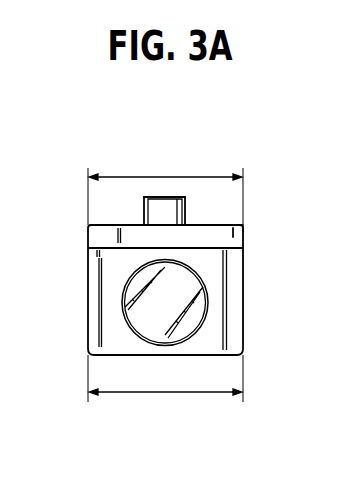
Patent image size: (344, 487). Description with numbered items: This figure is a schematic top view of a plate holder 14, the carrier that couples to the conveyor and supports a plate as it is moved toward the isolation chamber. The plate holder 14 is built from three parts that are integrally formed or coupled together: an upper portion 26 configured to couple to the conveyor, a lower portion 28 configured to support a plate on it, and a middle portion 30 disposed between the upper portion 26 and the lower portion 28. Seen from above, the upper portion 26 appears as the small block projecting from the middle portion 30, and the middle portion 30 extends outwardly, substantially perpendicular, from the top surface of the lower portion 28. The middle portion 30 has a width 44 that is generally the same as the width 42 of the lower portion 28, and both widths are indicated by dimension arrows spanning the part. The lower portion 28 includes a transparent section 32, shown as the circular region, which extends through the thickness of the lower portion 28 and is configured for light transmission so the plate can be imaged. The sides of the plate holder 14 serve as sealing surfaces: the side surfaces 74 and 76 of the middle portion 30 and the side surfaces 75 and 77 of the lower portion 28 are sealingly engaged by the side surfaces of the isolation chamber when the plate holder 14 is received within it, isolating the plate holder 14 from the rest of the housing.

The plate holder 14 is at (230, 147).
The upper portion 26 is at (161, 197).
The lower portion 28 is at (115, 335).
The middle portion 30 is at (243, 214).
The transparent section 32 is at (183, 293).
The width of the lower portion 42 is at (170, 394).
The width of the middle portion 44 is at (122, 177).
The side surface of the middle portion 74 is at (88, 236).
The side surface of the lower portion 75 is at (86, 288).
The side surface of the middle portion 76 is at (245, 237).
The side surface of the lower portion 77 is at (245, 273).